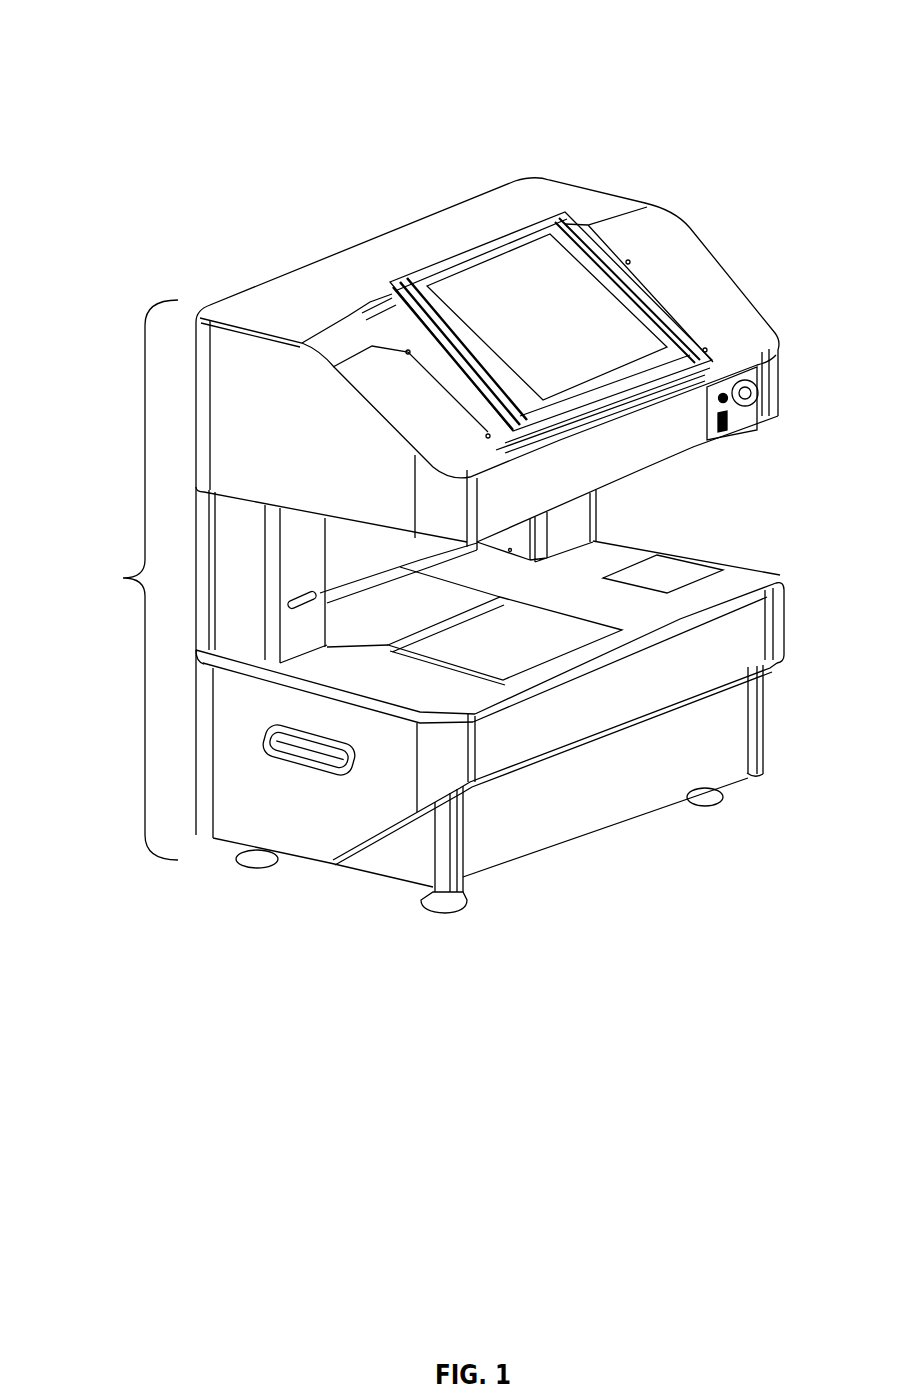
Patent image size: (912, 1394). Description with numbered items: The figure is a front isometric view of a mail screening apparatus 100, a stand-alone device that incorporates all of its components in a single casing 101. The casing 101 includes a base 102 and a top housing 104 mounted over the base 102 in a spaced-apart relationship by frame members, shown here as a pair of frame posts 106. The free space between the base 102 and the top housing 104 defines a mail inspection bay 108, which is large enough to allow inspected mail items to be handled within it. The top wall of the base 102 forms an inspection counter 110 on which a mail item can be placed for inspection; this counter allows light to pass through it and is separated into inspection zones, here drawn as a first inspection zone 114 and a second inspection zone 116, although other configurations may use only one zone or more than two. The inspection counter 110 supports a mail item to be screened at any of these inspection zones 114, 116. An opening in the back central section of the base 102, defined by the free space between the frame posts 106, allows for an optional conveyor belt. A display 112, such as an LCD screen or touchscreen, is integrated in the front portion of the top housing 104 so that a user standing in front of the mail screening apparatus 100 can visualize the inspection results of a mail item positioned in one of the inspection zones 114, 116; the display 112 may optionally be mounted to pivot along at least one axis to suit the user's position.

The mail screening apparatus 100 is at (108, 70).
The casing 101 is at (115, 580).
The base 102 is at (313, 835).
The top housing 104 is at (702, 297).
The frame posts 106 is at (308, 568).
The mail inspection bay 108 is at (712, 526).
The inspection counter 110 is at (755, 582).
The display 112 is at (561, 334).
The first inspection zone 114 is at (524, 643).
The second inspection zone 116 is at (682, 584).